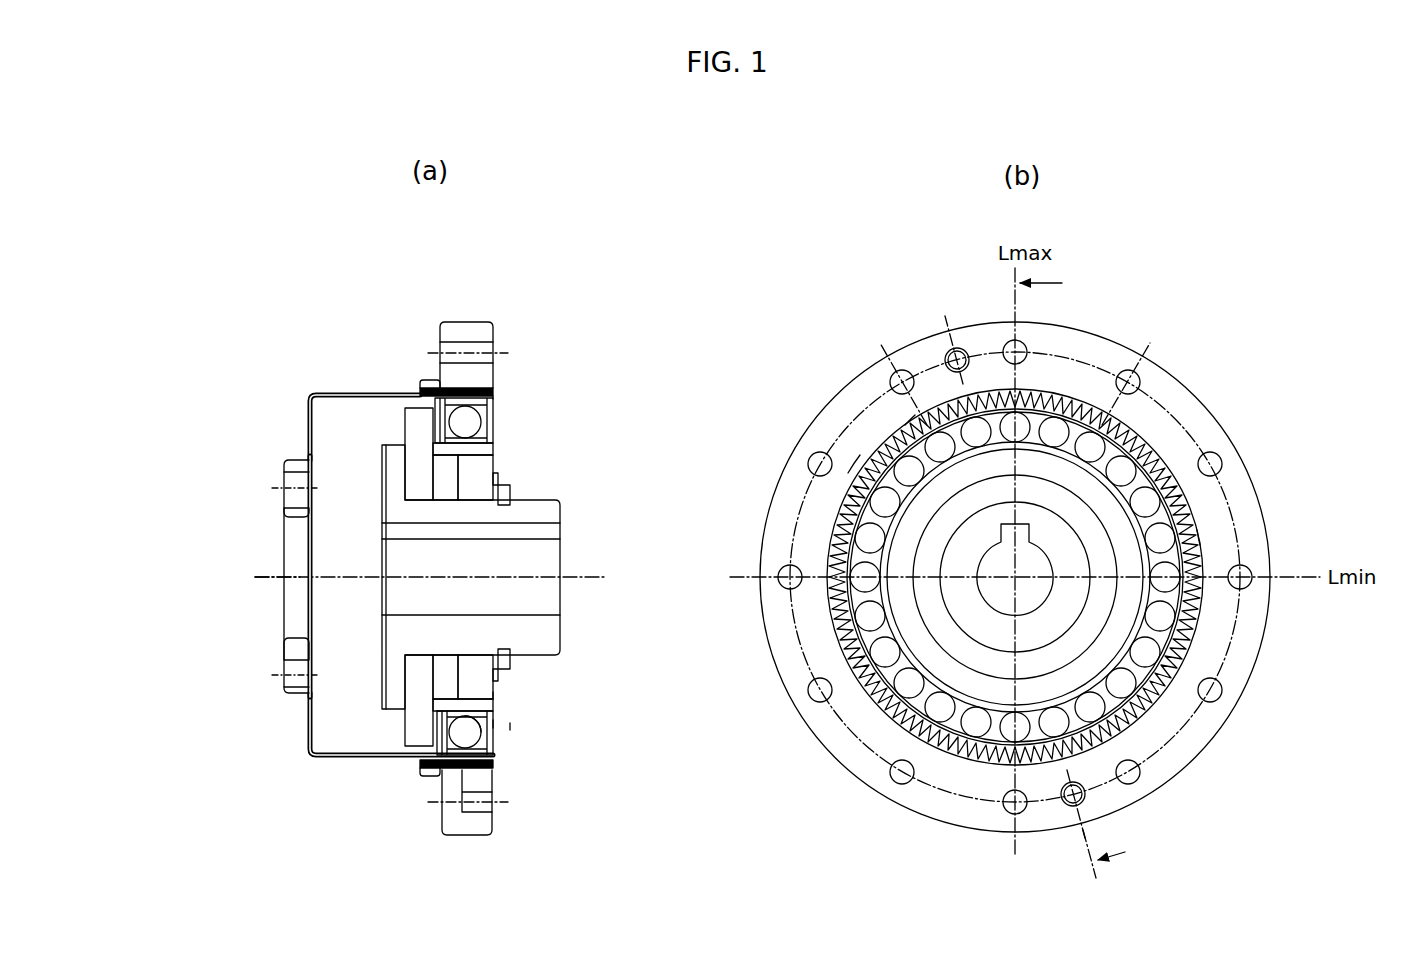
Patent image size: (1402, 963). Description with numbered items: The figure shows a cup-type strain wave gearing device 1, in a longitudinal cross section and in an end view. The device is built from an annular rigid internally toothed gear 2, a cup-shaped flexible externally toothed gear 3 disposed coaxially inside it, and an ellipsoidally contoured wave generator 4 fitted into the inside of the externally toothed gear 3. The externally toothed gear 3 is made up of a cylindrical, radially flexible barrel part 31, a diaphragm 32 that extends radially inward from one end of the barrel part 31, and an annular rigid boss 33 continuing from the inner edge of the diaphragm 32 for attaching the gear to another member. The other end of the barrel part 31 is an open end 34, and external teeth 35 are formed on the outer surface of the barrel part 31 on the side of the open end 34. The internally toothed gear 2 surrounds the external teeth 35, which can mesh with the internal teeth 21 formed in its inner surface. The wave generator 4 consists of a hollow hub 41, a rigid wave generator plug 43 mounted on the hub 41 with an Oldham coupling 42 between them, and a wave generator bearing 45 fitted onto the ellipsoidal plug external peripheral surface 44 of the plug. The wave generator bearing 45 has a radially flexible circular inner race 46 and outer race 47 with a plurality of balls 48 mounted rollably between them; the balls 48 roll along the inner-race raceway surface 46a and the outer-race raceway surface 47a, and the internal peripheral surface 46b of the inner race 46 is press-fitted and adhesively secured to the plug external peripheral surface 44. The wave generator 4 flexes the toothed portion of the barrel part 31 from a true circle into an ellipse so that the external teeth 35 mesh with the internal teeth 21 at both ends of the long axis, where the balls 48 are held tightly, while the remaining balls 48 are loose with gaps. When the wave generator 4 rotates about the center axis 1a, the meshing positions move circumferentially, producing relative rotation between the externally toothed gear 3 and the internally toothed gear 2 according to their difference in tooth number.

The strain wave gearing device 1 is at (539, 326).
The center axis 1a is at (283, 585).
The internally toothed gear 2 is at (500, 389).
The externally toothed gear 3 is at (502, 399).
The wave generator 4 is at (505, 466).
The internal teeth 21 is at (450, 388).
The barrel part 31 is at (362, 393).
The diaphragm 32 is at (306, 430).
The boss 33 is at (283, 478).
The open end 34 is at (496, 400).
The external teeth 35 is at (405, 420).
The hub 41 is at (562, 640).
The Oldham coupling 42 is at (405, 722).
The wave generator plug 43 is at (494, 692).
The plug external peripheral surface 44 is at (481, 738).
The wave generator bearing 45 is at (806, 345).
The inner race 46 is at (494, 707).
The inner-race raceway surface 46a is at (494, 724).
The internal peripheral surface 46b is at (1197, 530).
The outer race 47 is at (495, 752).
The outer-race raceway surface 47a is at (420, 770).
The balls 48 is at (467, 722).